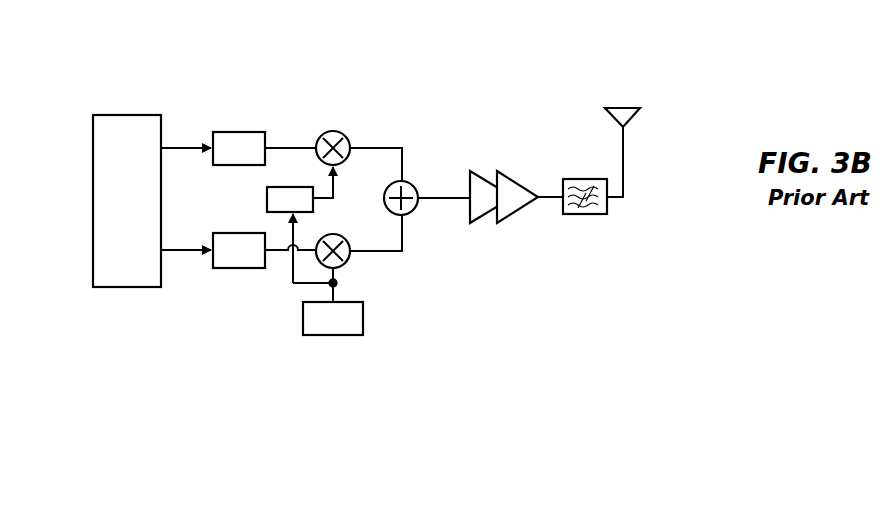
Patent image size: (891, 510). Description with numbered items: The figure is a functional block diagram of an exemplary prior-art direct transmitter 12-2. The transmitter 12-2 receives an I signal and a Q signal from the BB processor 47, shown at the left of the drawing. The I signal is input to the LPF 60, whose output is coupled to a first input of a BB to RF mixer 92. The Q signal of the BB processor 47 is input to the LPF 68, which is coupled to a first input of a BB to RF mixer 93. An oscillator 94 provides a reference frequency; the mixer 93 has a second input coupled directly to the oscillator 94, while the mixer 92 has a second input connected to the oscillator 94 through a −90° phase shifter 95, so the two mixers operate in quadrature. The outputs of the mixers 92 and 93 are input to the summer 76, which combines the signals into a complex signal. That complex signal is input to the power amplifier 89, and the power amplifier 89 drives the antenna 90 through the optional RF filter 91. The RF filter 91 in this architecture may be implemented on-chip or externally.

The direct transmitter 12-2 is at (180, 58).
The BB processor 47 is at (130, 114).
The LPF 60 is at (233, 131).
The LPF 68 is at (242, 270).
The BB to RF mixer 92 is at (345, 134).
The BB to RF mixer 93 is at (347, 264).
The −90° phase shifter 95 is at (266, 202).
The oscillator 94 is at (338, 336).
The summer 76 is at (407, 178).
The power amplifier 89 is at (522, 182).
The RF filter 91 is at (580, 215).
The antenna 90 is at (633, 118).